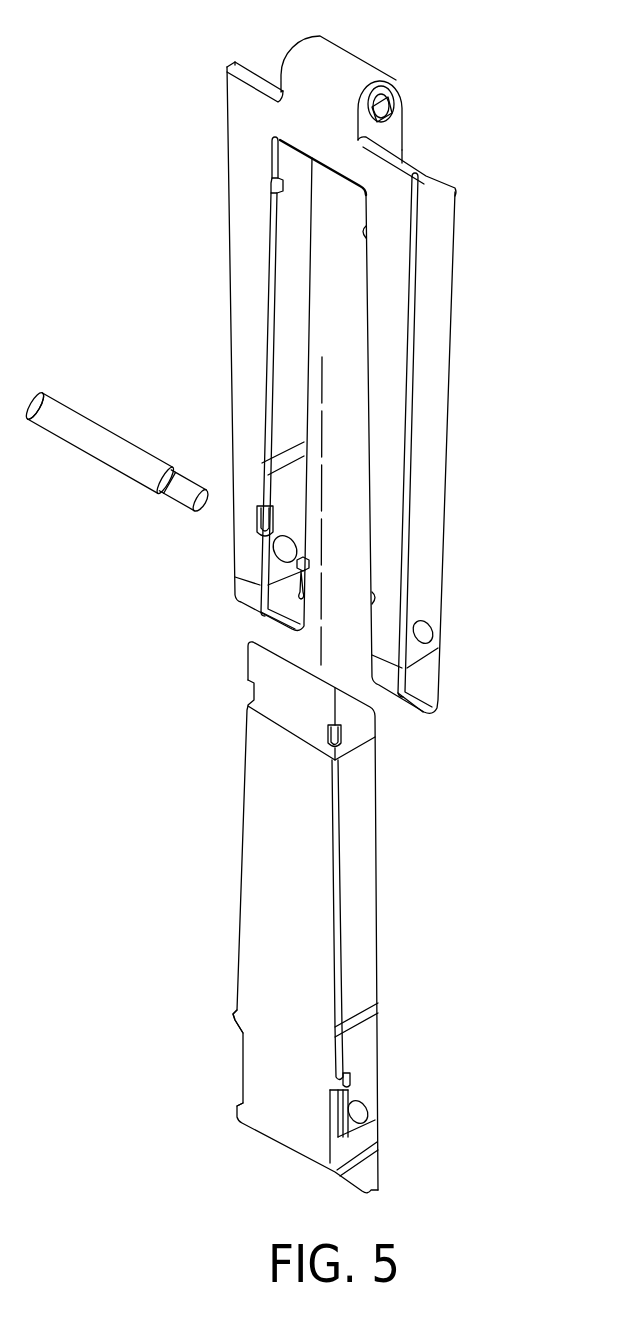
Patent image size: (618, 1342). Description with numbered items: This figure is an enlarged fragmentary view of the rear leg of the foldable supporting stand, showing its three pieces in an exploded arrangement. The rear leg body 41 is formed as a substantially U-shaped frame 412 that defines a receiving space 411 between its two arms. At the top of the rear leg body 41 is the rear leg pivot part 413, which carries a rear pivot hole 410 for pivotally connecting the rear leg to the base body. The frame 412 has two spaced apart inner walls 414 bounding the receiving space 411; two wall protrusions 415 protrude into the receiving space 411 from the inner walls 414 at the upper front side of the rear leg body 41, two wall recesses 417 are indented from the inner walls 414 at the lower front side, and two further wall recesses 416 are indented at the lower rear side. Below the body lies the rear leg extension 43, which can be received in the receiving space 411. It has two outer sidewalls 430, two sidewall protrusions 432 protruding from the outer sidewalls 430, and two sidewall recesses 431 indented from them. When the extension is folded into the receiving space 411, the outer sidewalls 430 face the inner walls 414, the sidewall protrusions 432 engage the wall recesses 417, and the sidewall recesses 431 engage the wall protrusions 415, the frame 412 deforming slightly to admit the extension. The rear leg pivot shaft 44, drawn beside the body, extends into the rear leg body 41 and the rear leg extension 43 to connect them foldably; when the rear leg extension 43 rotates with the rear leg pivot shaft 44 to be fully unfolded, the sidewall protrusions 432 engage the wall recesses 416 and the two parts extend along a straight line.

The rear leg body 41 is at (462, 509).
The rear pivot hole 410 is at (388, 99).
The receiving space 411 is at (345, 345).
The U-shaped frame 412 is at (435, 272).
The rear leg pivot part 413 is at (345, 83).
The inner walls 414 is at (290, 330).
The wall protrusions 415 is at (272, 190).
The wall recesses 416 is at (300, 590).
The wall recesses 417 is at (262, 518).
The rear leg extension 43 is at (385, 944).
The outer sidewalls 430 is at (240, 852).
The sidewall recesses 431 is at (255, 690).
The sidewall protrusions 432 is at (238, 1022).
The rear leg pivot shaft 44 is at (90, 440).